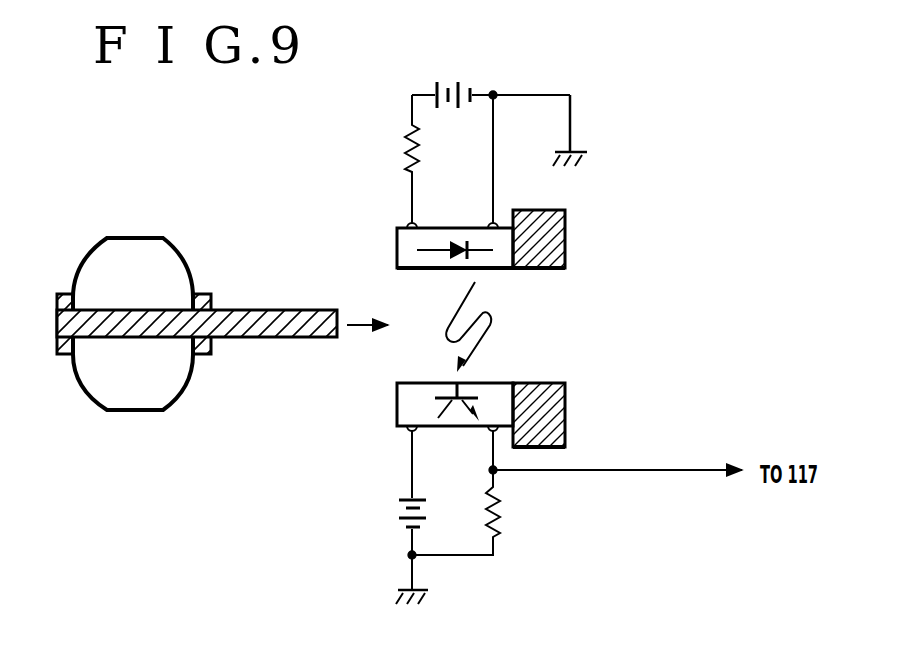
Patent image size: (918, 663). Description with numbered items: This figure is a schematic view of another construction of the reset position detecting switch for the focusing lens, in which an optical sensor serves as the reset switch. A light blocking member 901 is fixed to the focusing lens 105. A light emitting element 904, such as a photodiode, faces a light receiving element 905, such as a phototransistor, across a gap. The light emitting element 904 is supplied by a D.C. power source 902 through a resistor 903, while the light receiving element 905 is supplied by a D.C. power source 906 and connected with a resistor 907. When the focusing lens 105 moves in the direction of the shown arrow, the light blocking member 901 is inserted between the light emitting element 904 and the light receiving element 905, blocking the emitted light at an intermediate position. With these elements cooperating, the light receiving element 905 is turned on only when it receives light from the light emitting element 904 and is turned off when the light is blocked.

The focusing lens 105 is at (139, 238).
The light blocking member 901 is at (256, 338).
The D.C. power source 902 is at (448, 80).
The resistor 903 is at (405, 143).
The light emitting element 904 is at (397, 246).
The light receiving element 905 is at (397, 404).
The D.C. power source 906 is at (397, 514).
The resistor 907 is at (504, 513).